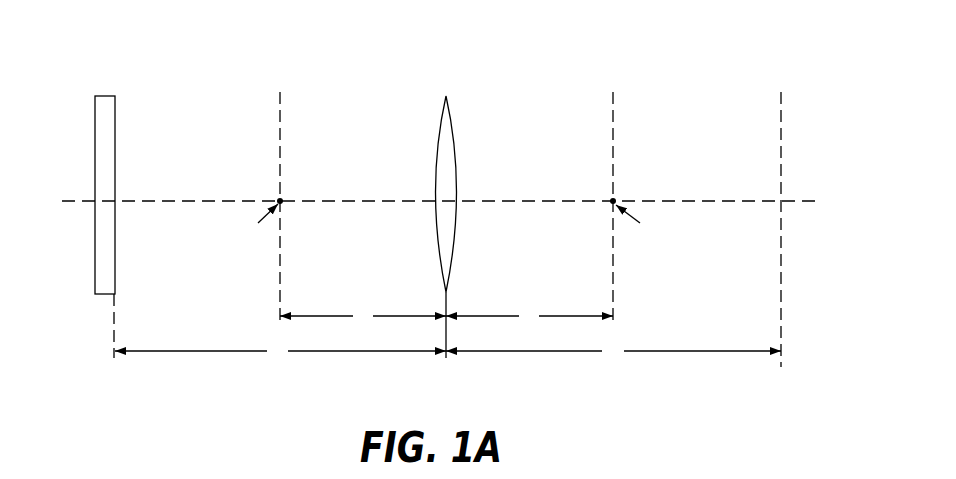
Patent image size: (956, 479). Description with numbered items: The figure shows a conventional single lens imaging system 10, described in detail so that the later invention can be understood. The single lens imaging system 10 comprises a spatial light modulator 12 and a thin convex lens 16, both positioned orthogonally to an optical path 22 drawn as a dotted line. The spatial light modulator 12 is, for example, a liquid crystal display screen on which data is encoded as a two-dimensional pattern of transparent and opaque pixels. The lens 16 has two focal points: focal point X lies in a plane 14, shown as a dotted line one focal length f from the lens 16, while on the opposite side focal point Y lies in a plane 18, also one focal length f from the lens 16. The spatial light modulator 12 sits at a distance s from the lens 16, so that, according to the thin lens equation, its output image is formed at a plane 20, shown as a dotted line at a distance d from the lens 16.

The single lens imaging system 10 is at (163, 376).
The spatial light modulator 12 is at (104, 95).
The plane 14 is at (280, 92).
The thin convex lens 16 is at (446, 95).
The plane 18 is at (613, 92).
The plane 20 is at (781, 92).
The optical path 22 is at (793, 205).